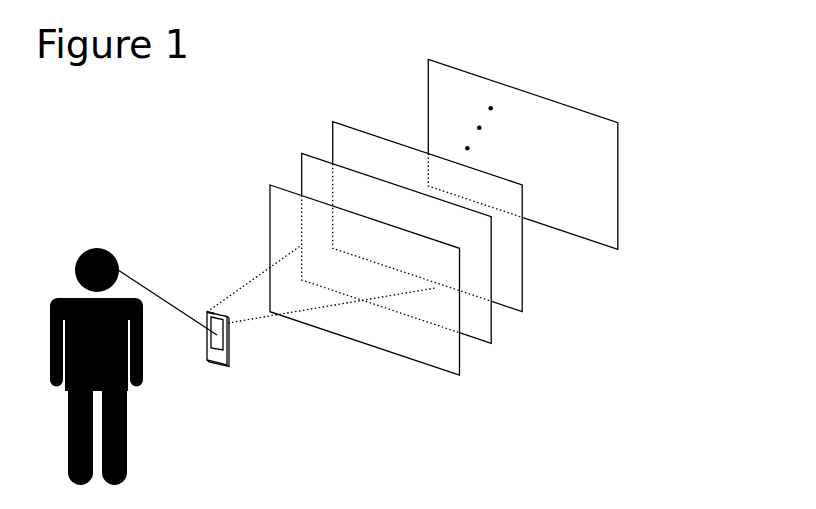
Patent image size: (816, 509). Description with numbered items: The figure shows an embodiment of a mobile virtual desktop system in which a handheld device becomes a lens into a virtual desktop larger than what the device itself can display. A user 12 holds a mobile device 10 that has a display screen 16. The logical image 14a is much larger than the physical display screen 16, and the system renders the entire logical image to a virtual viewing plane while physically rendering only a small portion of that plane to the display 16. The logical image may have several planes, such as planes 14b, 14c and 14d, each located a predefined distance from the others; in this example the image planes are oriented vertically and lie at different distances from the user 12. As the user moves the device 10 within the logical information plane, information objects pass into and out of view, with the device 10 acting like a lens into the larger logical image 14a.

The mobile device 10 is at (228, 364).
The user 12 is at (127, 457).
The logical image 14a is at (460, 371).
The logical image plane 14b is at (491, 340).
The logical image plane 14c is at (523, 310).
The logical image plane 14d is at (618, 232).
The display screen 16 is at (211, 311).